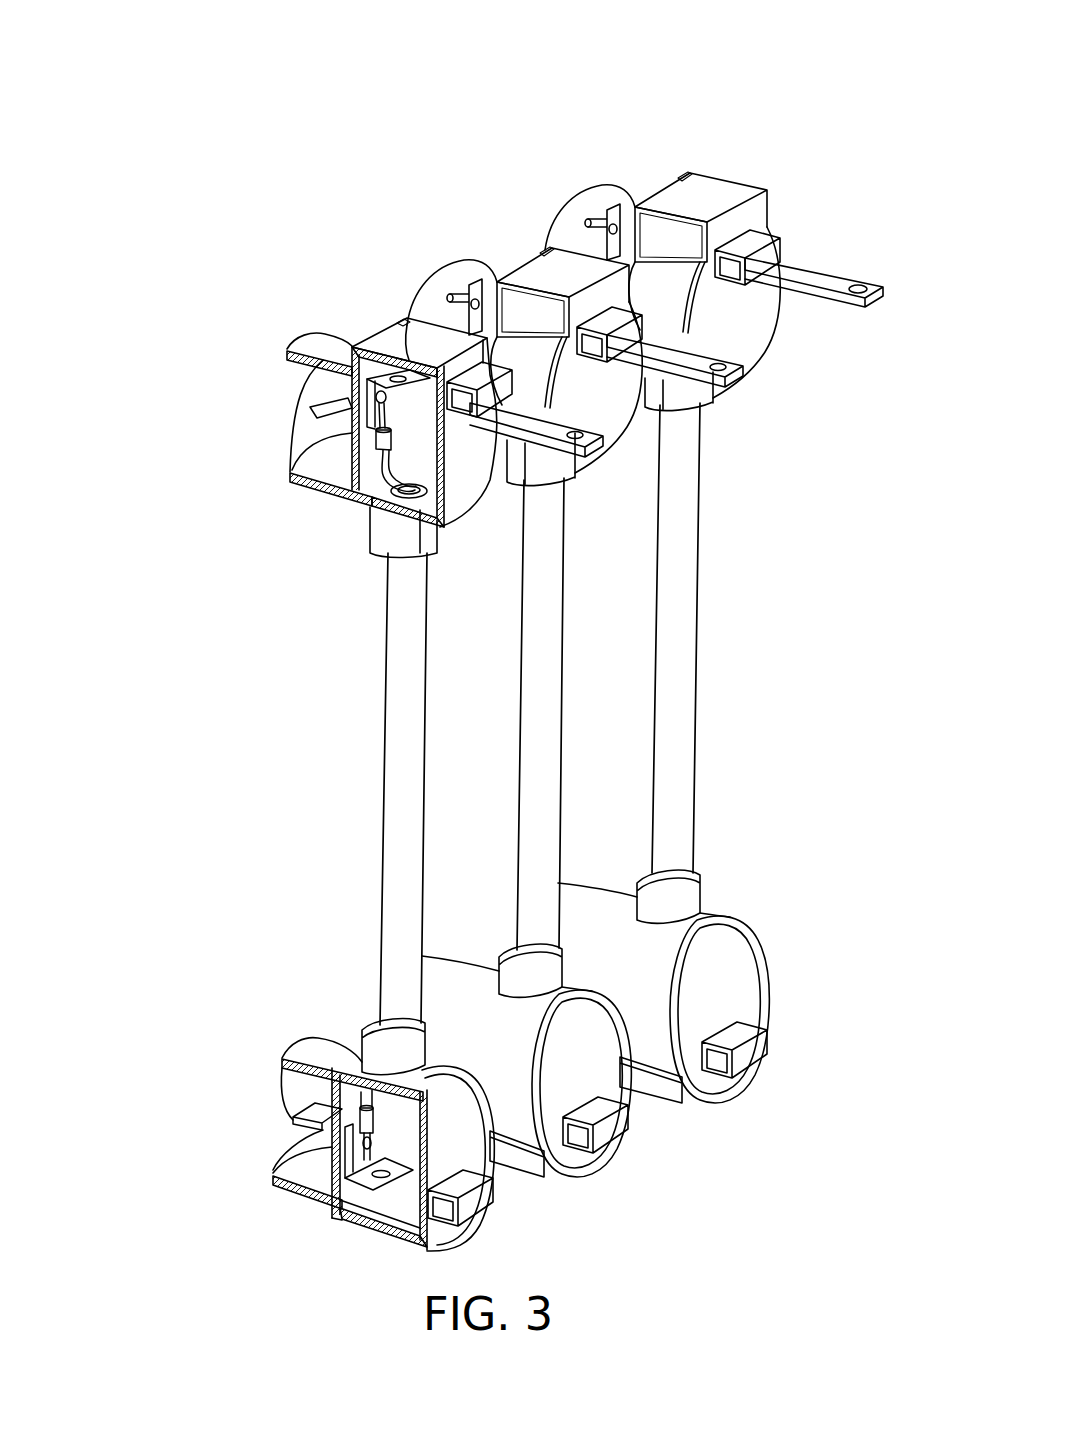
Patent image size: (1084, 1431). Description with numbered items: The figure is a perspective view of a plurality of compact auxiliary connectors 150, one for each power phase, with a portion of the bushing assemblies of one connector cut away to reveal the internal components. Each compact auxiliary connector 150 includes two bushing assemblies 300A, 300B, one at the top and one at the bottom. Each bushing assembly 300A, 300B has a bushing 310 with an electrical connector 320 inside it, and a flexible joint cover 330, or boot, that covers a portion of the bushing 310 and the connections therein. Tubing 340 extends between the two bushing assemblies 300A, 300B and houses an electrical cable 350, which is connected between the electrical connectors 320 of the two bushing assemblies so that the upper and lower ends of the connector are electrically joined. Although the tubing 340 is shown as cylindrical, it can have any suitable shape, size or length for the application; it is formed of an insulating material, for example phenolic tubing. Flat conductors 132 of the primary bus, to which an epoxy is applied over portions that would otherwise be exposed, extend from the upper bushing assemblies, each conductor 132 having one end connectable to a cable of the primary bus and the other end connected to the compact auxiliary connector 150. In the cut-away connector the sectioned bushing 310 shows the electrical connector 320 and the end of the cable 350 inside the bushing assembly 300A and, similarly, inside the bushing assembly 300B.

The compact auxiliary connector 150 is at (350, 136).
The bushing 310 is at (380, 332).
The electrical connector 320 is at (345, 389).
The flexible joint cover 330 is at (463, 487).
The tubing 340 is at (403, 760).
The electrical cable 350 is at (365, 510).
The conductor 132 is at (533, 415).
The bushing assembly 300A is at (278, 489).
The bushing assembly 300B is at (280, 1220).